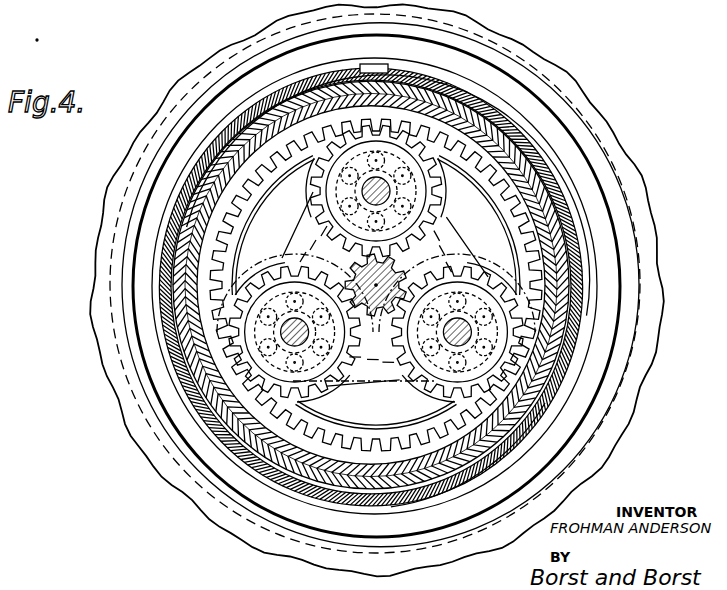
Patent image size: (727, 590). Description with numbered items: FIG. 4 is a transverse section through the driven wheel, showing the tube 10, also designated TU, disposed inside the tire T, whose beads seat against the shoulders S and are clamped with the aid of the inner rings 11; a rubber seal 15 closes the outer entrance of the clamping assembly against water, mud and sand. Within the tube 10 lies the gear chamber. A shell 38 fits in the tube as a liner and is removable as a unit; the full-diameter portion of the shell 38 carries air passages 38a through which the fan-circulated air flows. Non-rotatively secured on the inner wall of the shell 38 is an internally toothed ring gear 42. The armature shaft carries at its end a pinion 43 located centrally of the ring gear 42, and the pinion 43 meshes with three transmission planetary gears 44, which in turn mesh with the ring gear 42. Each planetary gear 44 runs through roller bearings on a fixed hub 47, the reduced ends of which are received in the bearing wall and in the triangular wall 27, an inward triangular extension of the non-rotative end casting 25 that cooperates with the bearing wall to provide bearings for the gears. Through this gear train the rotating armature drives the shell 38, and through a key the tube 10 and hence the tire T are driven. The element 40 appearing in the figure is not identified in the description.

The tire T is at (596, 107).
The tube TU is at (173, 247).
The rubber seal 15 is at (105, 300).
The inner ring 11 is at (528, 92).
The tube 10 is at (262, 110).
The key 40 is at (388, 70).
The air passages 38a is at (423, 88).
The shell 38 is at (470, 117).
The ring gear 42 is at (530, 182).
The shoulders S is at (550, 320).
The casting 25 is at (514, 244).
The triangular extension 27 is at (446, 242).
The transmission planetary gears 44 is at (310, 190).
The fixed hubs 47 is at (378, 192).
The pinion 43 is at (398, 272).